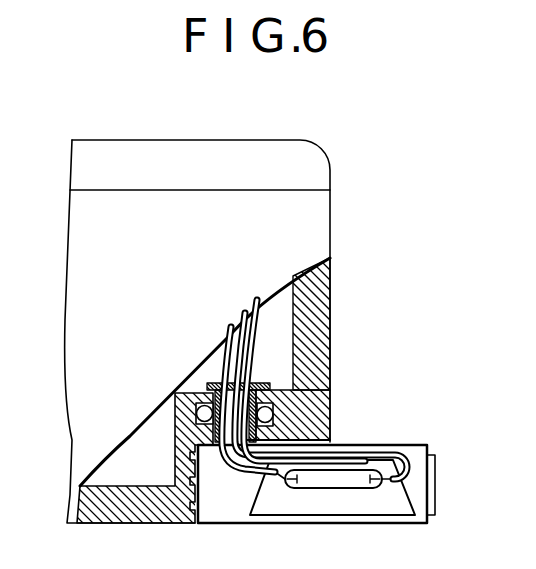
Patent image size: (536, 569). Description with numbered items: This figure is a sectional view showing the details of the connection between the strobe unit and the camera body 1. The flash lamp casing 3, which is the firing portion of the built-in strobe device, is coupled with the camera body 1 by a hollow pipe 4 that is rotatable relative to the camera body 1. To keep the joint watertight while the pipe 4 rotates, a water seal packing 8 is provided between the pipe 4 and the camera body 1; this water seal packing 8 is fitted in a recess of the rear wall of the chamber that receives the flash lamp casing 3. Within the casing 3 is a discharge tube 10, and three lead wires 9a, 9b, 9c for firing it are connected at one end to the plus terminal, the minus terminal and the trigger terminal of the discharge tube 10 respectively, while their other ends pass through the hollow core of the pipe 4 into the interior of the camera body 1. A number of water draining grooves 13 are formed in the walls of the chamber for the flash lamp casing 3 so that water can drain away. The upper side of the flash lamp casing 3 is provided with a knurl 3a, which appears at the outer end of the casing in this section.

The camera body 1 is at (83, 461).
The flash lamp casing 3 is at (232, 513).
The knurl 3a is at (436, 467).
The hollow pipe 4 is at (274, 405).
The water seal packing 8 is at (268, 416).
The lead wire 9a is at (223, 358).
The lead wire 9b is at (264, 312).
The lead wire 9c is at (234, 320).
The discharge tube 10 is at (326, 488).
The water draining grooves 13 is at (197, 482).